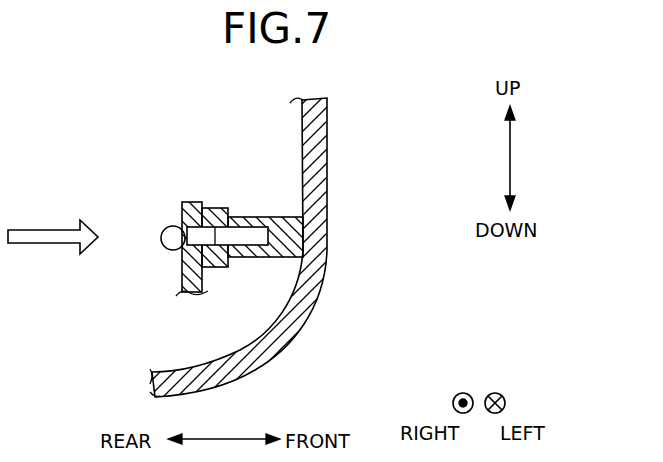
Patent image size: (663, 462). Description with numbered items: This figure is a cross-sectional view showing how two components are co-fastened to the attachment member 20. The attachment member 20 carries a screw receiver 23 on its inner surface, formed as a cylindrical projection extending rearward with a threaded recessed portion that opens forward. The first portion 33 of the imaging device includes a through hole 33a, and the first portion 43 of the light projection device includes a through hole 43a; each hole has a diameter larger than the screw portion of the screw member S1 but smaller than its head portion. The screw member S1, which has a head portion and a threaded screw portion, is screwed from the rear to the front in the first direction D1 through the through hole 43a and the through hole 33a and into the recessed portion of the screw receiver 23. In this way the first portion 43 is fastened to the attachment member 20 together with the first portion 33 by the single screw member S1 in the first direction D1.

The attachment member 20 is at (263, 352).
The screw receiver 23 is at (260, 217).
The first portion 33 is at (220, 215).
The first portion 43 is at (193, 203).
The through hole 43a is at (164, 223).
The through hole 33a is at (184, 268).
The screw member S1 is at (167, 243).
The first direction D1 is at (33, 229).